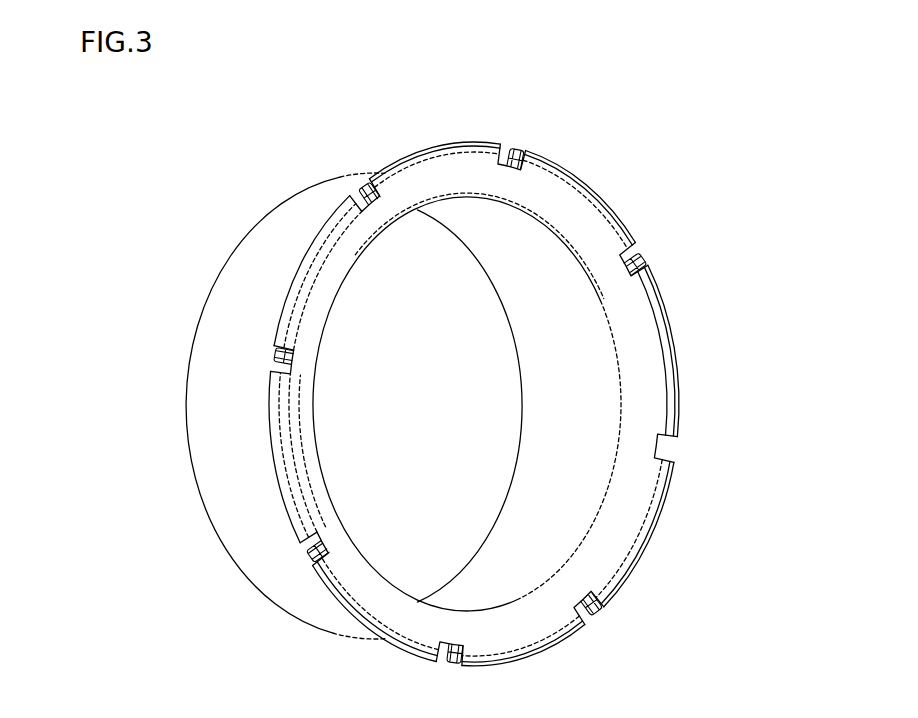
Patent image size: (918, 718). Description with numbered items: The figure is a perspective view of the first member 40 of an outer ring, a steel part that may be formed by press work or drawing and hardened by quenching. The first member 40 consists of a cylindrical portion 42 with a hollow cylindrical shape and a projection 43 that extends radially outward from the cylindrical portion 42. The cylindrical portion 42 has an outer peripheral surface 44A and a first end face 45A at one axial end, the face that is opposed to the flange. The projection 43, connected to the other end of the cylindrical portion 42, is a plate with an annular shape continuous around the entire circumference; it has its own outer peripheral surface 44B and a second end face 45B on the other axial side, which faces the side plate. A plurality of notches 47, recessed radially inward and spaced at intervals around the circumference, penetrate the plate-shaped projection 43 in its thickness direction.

The first member 40 is at (516, 388).
The cylindrical portion 42 is at (573, 348).
The projection 43 is at (640, 403).
The outer peripheral surface 44A is at (322, 198).
The outer peripheral surface 44B is at (417, 150).
The first end face 45A is at (244, 237).
The second end face 45B is at (570, 183).
The notches 47 is at (513, 147).